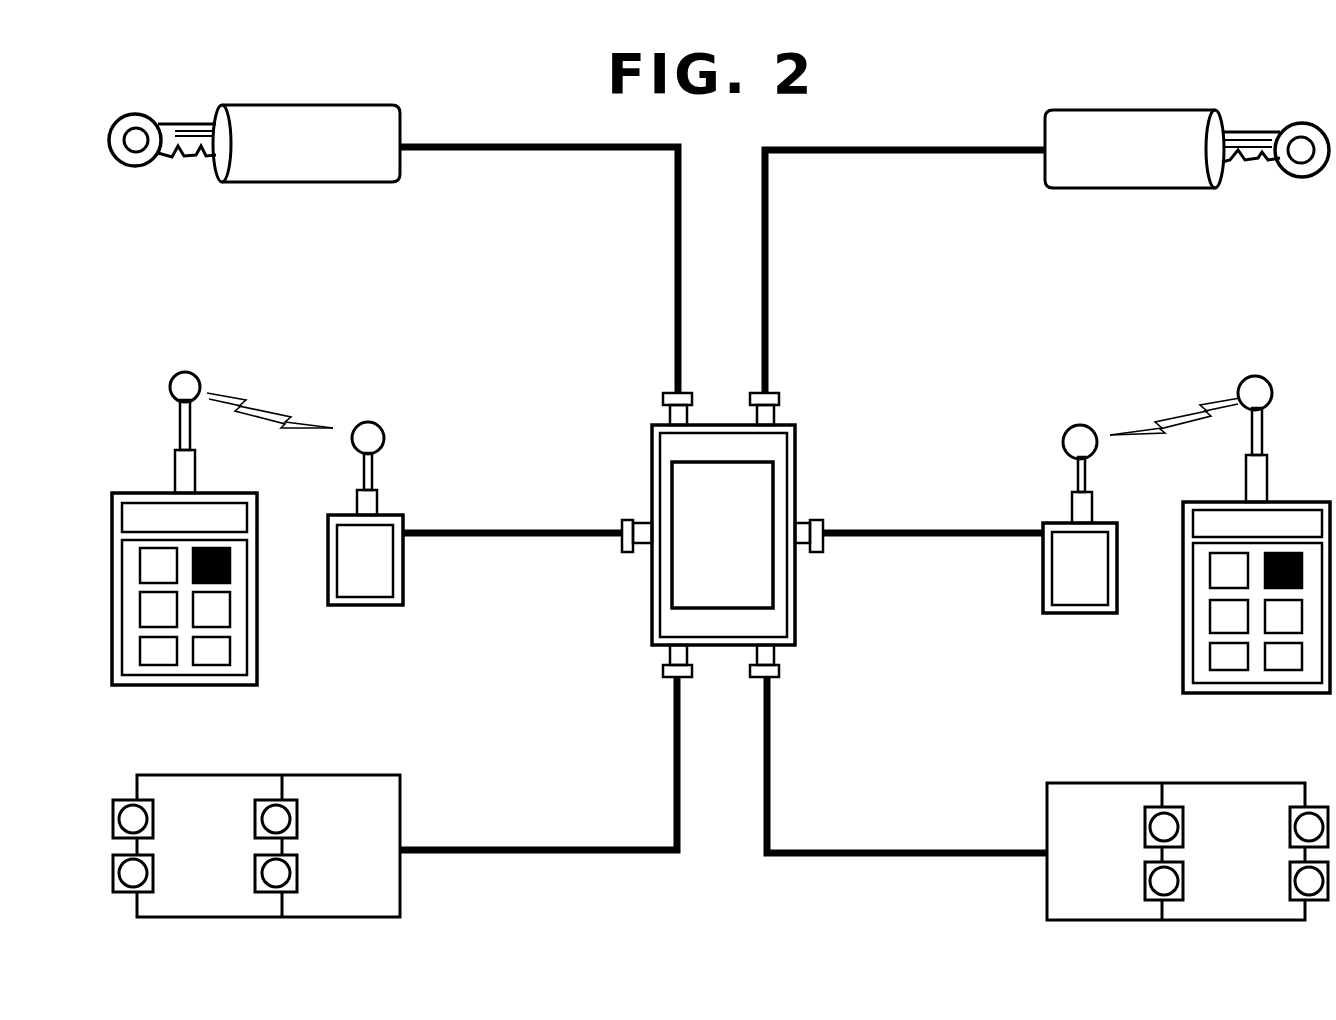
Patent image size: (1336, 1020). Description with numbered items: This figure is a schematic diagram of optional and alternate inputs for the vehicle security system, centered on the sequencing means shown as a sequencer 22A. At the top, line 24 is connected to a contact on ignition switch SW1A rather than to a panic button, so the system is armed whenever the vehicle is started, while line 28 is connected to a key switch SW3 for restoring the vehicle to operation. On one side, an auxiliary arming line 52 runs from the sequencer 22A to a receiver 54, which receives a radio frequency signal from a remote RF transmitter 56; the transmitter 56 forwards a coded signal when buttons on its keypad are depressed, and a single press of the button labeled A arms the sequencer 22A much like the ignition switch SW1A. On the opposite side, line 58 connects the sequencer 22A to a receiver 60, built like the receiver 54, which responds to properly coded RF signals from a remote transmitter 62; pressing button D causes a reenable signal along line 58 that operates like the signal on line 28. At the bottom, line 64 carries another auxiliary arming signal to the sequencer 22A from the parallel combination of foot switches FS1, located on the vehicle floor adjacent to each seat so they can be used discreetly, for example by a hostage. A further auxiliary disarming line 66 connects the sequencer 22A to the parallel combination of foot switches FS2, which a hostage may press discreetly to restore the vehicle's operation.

The sequencer 22A is at (652, 462).
The line 24 is at (578, 146).
The line 28 is at (930, 149).
The auxiliary arming line 52 is at (563, 532).
The receiver 54 is at (403, 578).
The remote RF transmitter 56 is at (257, 655).
The line 58 is at (945, 533).
The receiver 60 is at (1043, 578).
The remote transmitter 62 is at (1183, 665).
The line 64 is at (540, 848).
The cable to foot switch FS2 66 is at (925, 851).
The ignition switch SW1A is at (293, 182).
The key switch SW3 is at (1092, 188).
The foot switches FS1 is at (255, 875).
The foot switches FS2 is at (1290, 832).